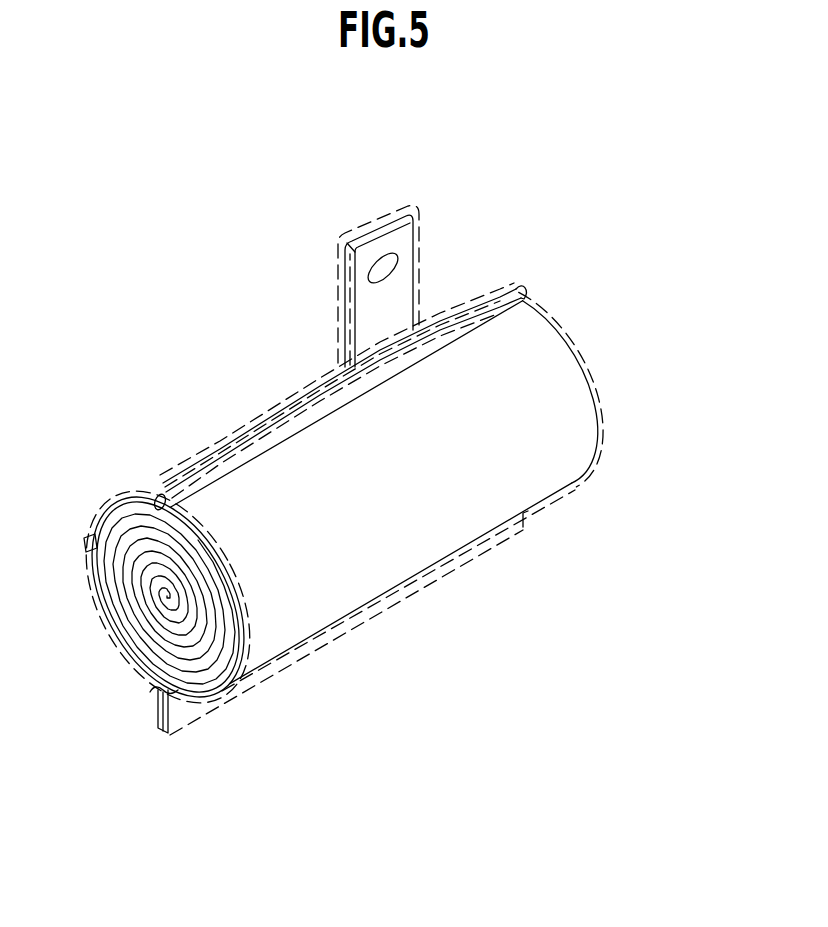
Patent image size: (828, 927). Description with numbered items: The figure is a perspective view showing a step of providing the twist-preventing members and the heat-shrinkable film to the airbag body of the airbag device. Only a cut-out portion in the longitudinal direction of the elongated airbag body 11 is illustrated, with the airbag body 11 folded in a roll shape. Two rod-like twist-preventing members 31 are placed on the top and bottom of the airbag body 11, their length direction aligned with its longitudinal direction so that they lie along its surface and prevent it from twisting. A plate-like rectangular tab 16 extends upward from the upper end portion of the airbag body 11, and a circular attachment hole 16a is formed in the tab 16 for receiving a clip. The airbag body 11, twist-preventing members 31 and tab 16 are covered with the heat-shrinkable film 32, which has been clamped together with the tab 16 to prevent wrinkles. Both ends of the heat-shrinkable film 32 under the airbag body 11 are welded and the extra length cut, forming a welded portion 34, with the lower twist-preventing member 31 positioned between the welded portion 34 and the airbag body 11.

The airbag body 11 is at (126, 636).
The tab 16 is at (343, 292).
The attachment hole 16a is at (386, 258).
The twist-preventing member 31 is at (526, 292).
The heat-shrinkable film 32 is at (421, 273).
The welded portion 34 is at (427, 585).